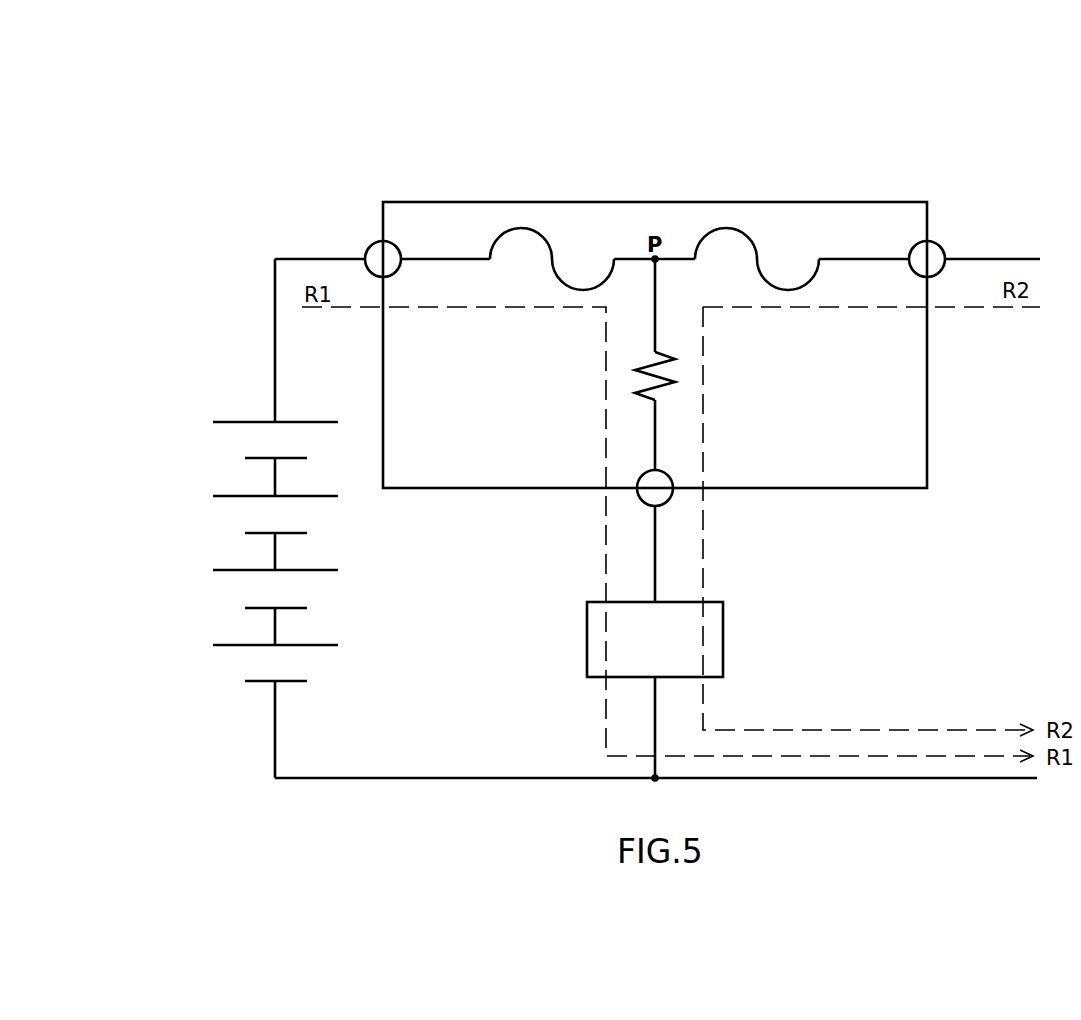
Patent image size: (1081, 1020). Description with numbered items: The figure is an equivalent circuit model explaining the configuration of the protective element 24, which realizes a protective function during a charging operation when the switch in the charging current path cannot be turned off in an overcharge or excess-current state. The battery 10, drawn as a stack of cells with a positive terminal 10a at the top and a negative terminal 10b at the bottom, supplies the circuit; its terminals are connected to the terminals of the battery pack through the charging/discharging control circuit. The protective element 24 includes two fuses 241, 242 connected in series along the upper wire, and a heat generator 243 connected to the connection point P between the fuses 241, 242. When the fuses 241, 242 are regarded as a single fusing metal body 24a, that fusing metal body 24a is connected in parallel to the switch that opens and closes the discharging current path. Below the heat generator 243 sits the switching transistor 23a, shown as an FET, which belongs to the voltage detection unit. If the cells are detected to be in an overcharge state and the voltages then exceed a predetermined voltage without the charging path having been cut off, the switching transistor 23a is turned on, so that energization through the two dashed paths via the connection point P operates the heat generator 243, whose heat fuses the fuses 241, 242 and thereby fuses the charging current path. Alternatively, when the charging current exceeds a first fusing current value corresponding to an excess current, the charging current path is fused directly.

The protective element 24 is at (882, 100).
The fusing metal body 24a is at (728, 165).
The fuse 241 is at (523, 228).
The fuse 242 is at (723, 228).
The heat generator 243 is at (633, 381).
The switching transistor 23a is at (724, 637).
The battery 10 is at (205, 423).
The positive terminal 10a is at (275, 421).
The negative terminal 10b is at (275, 683).